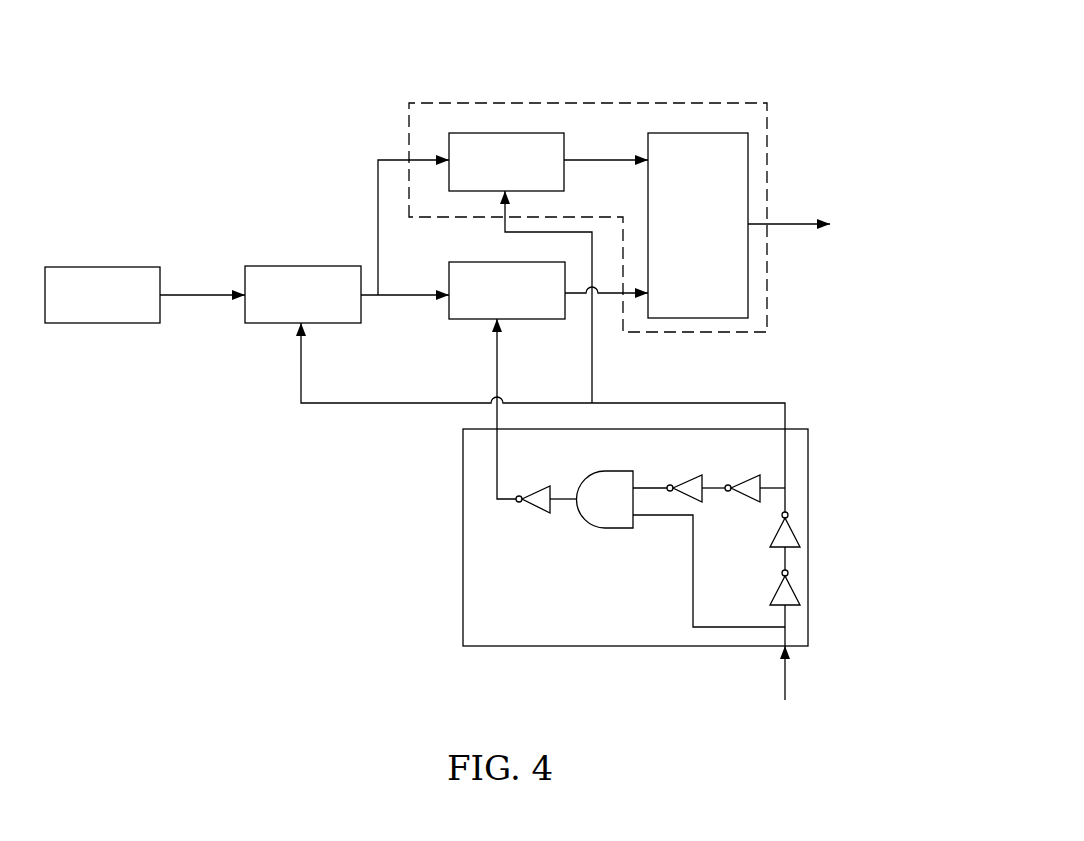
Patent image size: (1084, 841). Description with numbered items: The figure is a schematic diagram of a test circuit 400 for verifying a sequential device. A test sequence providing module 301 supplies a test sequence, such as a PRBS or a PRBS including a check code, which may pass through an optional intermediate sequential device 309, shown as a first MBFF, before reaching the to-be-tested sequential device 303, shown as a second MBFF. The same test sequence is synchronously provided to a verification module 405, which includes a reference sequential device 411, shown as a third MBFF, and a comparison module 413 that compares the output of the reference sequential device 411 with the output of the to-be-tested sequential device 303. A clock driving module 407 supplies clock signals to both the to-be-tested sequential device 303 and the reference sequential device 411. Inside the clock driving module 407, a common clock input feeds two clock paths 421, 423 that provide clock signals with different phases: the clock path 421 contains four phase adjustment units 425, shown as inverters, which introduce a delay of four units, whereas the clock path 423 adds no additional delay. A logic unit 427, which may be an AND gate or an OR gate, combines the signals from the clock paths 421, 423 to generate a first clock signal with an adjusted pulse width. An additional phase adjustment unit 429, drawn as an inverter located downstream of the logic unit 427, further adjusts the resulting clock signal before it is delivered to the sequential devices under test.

The test circuit 400 is at (143, 209).
The test sequence providing module 301 is at (122, 323).
The intermediate sequential device 309 is at (308, 265).
The to-be-tested sequential device 303 is at (467, 320).
The reference sequential device 411 is at (505, 132).
The comparison module 413 is at (748, 202).
The verification module 405 is at (702, 102).
The clock driving module 407 is at (463, 488).
The clock path 421 is at (747, 468).
The clock path 423 is at (688, 598).
The phase adjustment unit 425 is at (794, 533).
The logic unit 427 is at (593, 528).
The phase adjustment unit 429 is at (540, 508).